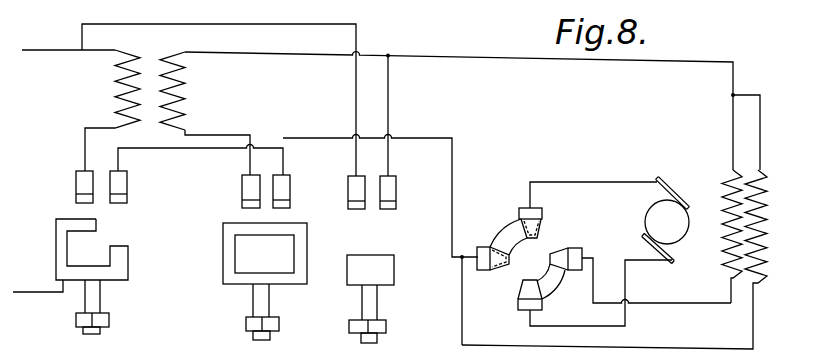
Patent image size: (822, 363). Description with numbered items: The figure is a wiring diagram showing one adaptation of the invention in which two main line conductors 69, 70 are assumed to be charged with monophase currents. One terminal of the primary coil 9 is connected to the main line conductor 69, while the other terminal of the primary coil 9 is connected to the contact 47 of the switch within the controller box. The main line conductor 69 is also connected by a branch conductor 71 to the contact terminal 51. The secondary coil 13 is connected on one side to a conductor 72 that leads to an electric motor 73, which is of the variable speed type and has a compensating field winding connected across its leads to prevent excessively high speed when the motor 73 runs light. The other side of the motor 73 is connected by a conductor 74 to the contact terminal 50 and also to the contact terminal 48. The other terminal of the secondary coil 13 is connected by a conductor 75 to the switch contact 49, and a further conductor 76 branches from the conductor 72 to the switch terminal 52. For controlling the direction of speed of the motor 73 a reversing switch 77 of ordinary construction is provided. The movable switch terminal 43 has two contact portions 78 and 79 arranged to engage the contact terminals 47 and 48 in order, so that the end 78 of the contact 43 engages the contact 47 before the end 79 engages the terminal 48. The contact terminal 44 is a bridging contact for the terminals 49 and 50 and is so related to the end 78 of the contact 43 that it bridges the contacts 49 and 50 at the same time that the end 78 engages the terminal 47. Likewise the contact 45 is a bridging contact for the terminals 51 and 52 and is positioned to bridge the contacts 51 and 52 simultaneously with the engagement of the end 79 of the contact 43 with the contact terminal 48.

The main line conductor 69 is at (42, 49).
The branch conductor 71 is at (233, 21).
The primary coil 9 is at (112, 110).
The secondary coil 13 is at (189, 91).
The conductor 75 is at (228, 135).
The conductor 72 is at (501, 61).
The conductor 76 is at (389, 103).
The conductor 74 is at (454, 155).
The contact 47 is at (76, 182).
The contact terminal 48 is at (127, 182).
The switch contact 49 is at (242, 190).
The contact terminal 50 is at (290, 188).
The contact terminal 51 is at (349, 180).
The switch terminal 52 is at (396, 186).
The contact portion 78 is at (56, 234).
The contact portion 79 is at (128, 250).
The movable switch terminal 43 is at (108, 283).
The main line conductor 70 is at (33, 293).
The bridging contact 44 is at (223, 263).
The bridging contact 45 is at (394, 276).
The reversing switch 77 is at (604, 254).
The electric motor 73 is at (656, 220).